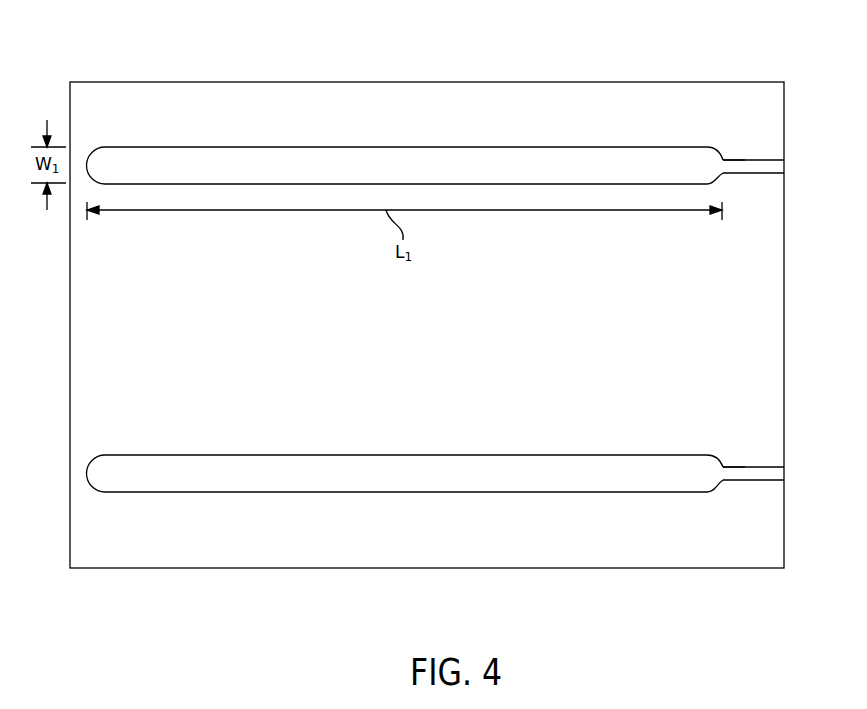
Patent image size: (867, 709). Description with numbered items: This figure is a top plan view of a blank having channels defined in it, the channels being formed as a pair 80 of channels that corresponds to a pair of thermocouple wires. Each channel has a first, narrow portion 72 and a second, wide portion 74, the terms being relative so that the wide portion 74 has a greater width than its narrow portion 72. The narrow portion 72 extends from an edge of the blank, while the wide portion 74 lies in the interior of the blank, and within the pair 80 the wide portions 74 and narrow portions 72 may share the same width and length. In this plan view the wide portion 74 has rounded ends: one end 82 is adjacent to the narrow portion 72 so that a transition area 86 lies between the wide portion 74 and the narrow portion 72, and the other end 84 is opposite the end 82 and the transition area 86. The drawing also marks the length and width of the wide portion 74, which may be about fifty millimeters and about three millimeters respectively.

The narrow portion 72 is at (762, 167).
The wide portion 74 is at (203, 163).
The pair of channels 80 is at (100, 170).
The end 82 is at (710, 162).
The other end 84 is at (100, 163).
The transition area 86 is at (723, 160).